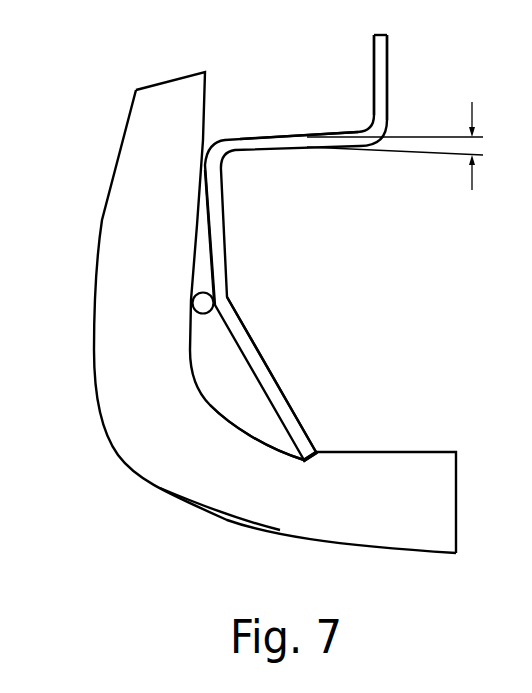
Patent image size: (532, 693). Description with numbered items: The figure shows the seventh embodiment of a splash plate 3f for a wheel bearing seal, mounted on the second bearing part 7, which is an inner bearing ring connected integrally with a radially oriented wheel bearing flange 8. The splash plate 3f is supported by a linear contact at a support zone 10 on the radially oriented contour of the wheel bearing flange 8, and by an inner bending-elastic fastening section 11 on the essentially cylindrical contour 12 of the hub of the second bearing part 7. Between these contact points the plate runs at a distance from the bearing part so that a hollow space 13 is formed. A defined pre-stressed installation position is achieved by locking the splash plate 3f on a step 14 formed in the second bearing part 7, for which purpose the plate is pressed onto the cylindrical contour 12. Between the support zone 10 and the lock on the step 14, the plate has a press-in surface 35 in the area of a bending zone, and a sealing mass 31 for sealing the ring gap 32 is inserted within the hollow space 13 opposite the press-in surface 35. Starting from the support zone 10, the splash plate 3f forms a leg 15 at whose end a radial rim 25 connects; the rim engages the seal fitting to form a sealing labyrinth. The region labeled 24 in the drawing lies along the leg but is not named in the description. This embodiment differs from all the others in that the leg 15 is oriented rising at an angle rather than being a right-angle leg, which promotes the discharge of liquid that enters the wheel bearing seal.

The second bearing part 7 is at (237, 507).
The wheel bearing flange 8 is at (124, 150).
The support zone 10 is at (203, 160).
The fastening section 11 is at (258, 383).
The cylindrical contour 12 is at (382, 452).
The hollow space 13 is at (216, 397).
The step 14 is at (315, 458).
The leg 15 is at (323, 132).
The transition region 24 is at (267, 118).
The radial rim 25 is at (388, 93).
The sealing mass 31 is at (194, 313).
The ring gap 32 is at (198, 267).
The press-in surface 35 is at (227, 297).
The splash plate 3f is at (422, 202).